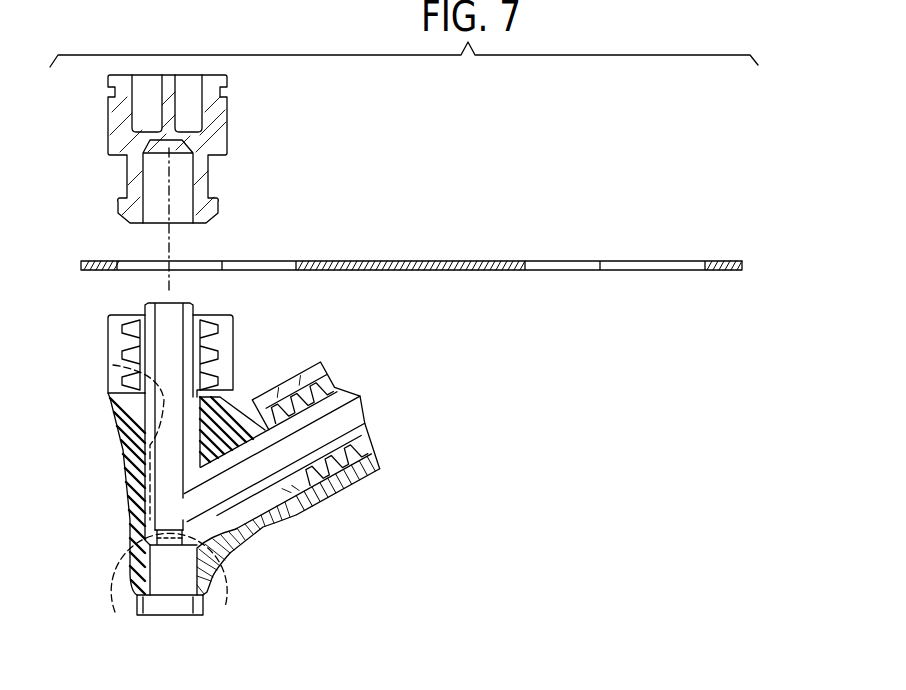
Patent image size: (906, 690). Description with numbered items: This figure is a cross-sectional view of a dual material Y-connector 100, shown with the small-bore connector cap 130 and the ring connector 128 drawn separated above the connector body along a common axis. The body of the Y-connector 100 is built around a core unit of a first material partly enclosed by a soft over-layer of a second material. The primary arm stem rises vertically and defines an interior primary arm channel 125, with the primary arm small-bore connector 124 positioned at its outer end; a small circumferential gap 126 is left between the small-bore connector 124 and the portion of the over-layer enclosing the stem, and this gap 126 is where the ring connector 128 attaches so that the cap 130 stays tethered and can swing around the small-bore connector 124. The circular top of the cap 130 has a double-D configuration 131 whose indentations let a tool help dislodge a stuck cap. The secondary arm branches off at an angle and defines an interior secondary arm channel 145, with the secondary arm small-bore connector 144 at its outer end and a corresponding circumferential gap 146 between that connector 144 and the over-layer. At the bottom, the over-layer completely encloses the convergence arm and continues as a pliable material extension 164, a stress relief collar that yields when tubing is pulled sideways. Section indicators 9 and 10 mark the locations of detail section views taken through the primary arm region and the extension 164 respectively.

The small-bore connector cap 130 is at (220, 130).
The double-D configuration 131 is at (165, 102).
The ring connector 128 is at (400, 262).
The primary arm channel 125 is at (180, 318).
The primary arm small-bore connector 124 is at (108, 323).
The circumferential gap 126 is at (112, 396).
The section line 9- 9 is at (113, 363).
The dual material Y-connector 100 is at (303, 566).
The secondary arm channel 145 is at (345, 412).
The secondary arm small-bore connector 144 is at (365, 478).
The circumferential gap 146 is at (305, 505).
The pliable material extension 164 is at (148, 602).
The section line 10- 10 is at (123, 627).